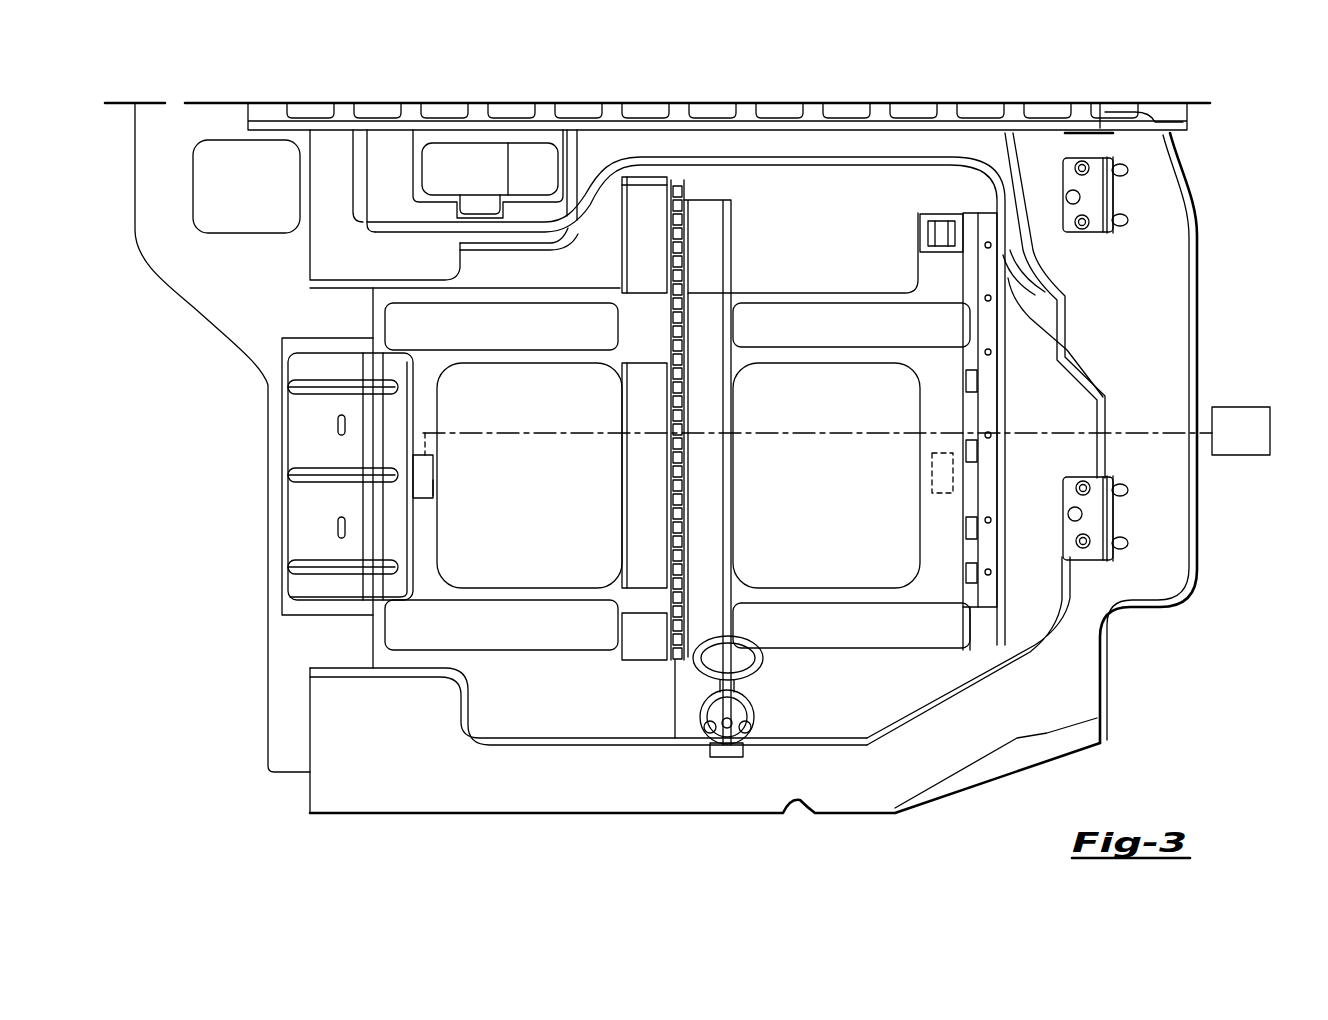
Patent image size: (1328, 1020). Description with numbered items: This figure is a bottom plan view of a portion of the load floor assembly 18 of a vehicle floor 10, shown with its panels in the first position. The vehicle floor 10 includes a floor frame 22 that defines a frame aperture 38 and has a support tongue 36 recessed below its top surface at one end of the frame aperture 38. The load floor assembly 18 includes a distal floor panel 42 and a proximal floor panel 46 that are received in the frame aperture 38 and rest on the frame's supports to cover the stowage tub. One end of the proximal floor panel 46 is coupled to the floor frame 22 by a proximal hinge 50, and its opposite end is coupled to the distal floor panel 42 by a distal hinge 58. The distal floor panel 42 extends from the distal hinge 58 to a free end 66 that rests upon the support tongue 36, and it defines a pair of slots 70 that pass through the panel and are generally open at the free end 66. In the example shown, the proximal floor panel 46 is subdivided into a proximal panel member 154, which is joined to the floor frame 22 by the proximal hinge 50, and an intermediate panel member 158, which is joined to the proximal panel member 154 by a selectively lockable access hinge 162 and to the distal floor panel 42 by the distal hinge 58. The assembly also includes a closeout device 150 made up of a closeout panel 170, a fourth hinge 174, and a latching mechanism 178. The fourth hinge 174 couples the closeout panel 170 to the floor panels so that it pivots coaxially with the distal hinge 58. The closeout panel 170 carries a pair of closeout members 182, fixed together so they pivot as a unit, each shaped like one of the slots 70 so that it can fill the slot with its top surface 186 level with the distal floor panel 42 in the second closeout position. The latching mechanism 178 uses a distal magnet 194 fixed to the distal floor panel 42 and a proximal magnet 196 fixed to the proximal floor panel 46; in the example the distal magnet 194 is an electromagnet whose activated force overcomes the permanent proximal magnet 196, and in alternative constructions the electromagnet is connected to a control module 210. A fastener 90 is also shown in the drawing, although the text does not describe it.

The vehicle floor 10 is at (217, 392).
The load floor assembly 18 is at (815, 175).
The floor frame 22 is at (835, 783).
The support tongue 36 is at (413, 535).
The frame aperture 38 is at (573, 750).
The distal floor panel 42 is at (525, 725).
The proximal floor panel 46 is at (1033, 603).
The proximal hinge 50 is at (1120, 178).
The distal hinge 58 is at (680, 230).
The free end 66 is at (373, 293).
The slots 70 is at (510, 302).
The fastener 90 is at (730, 758).
The closeout device 150 is at (813, 307).
The proximal panel member 154 is at (1073, 383).
The intermediate panel member 158 is at (902, 167).
The access hinge 162 is at (945, 226).
The closeout panel 170 is at (933, 443).
The fourth hinge 174 is at (667, 320).
The latching mechanism 178 is at (435, 487).
The closeout members 182 is at (780, 333).
The top surface 186 is at (867, 322).
The distal magnet 194 is at (433, 470).
The proximal magnet 196 is at (943, 493).
The control module 210 is at (1250, 455).